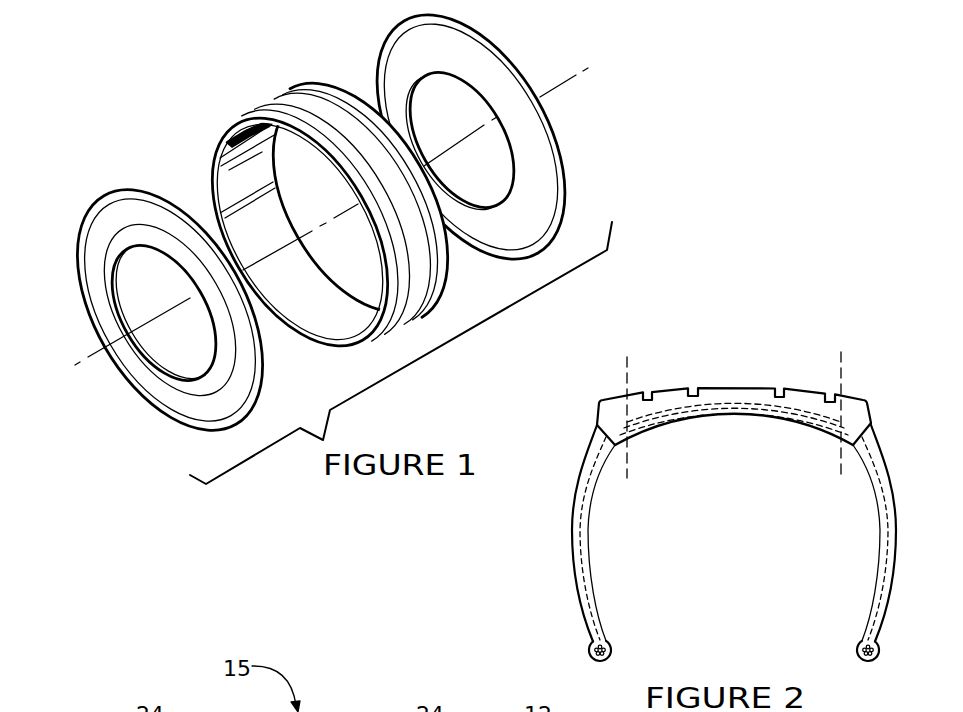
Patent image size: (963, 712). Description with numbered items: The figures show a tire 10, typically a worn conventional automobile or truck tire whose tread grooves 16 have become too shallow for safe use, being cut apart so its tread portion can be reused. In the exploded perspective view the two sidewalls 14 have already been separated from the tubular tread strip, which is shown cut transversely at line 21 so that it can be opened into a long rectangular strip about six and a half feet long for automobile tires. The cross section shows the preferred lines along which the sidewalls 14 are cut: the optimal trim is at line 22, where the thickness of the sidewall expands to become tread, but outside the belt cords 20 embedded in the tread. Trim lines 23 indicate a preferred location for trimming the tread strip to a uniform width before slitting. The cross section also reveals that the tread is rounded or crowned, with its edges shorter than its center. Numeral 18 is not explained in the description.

In FIG. 1, the tire 10 is at (219, 77).
In FIG. 2, the tire 10 is at (807, 364).
In FIG. 1, the sidewalls 14 is at (135, 222).
In FIG. 2, the sidewalls 14 is at (578, 566).
In FIG. 1, the tread grooves 16 is at (283, 103).
In FIG. 2, the tread grooves 16 is at (781, 388).
In FIG. 1, the rim flange 18 is at (563, 178).
In FIG. 2, the belt cords 20 is at (708, 412).
In FIG. 1, the line 21 is at (270, 175).
In FIG. 2, the line 22 is at (598, 438).
In FIG. 2, the trim lines 23 is at (626, 382).